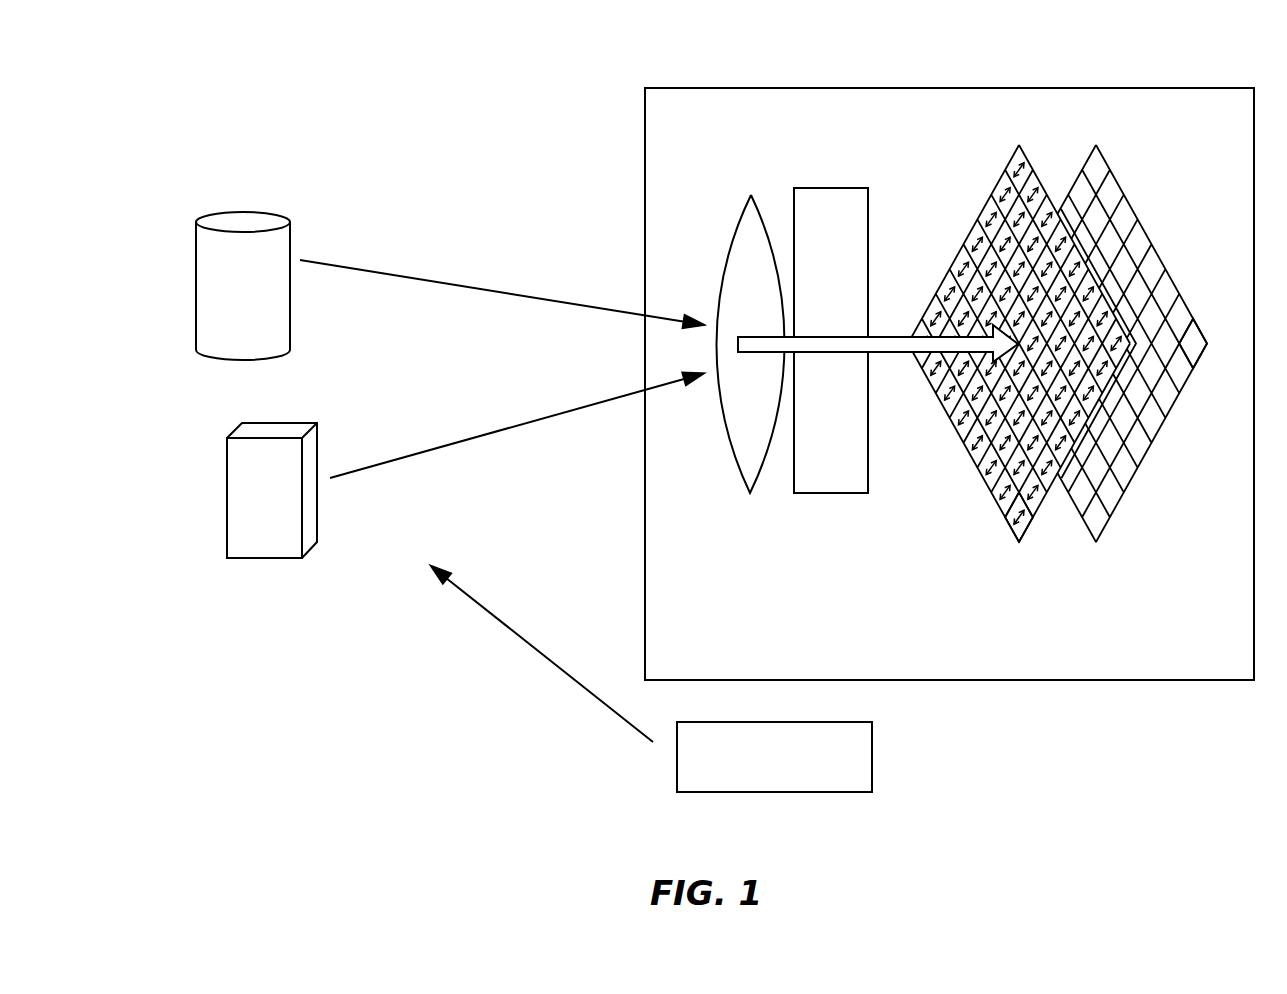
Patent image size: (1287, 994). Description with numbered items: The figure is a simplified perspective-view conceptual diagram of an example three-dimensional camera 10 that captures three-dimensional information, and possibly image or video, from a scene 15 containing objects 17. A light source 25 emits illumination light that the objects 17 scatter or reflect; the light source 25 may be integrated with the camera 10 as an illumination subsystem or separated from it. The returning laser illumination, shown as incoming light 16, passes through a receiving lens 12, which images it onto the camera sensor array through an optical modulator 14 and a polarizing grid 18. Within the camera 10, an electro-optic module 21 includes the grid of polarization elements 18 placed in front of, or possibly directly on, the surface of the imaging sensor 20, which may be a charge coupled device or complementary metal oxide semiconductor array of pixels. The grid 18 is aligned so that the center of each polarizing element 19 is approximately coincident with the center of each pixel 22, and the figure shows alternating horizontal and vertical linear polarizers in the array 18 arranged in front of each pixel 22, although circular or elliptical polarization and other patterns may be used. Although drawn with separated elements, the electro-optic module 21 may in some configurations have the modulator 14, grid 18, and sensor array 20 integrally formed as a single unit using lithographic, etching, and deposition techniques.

The 3D camera 10 is at (1170, 88).
The receiving lens 12 is at (742, 215).
The optical modulator 14 is at (836, 188).
The scene 15 is at (329, 62).
The incoming light 16 is at (892, 333).
The objects 17 is at (205, 380).
The polarizing grid 18 is at (1022, 363).
The polarizing element 19 is at (1023, 517).
The imaging sensor 20 is at (1105, 328).
The electro-optic module 21 is at (1126, 589).
The pixel 22 is at (1199, 336).
The light source 25 is at (815, 793).